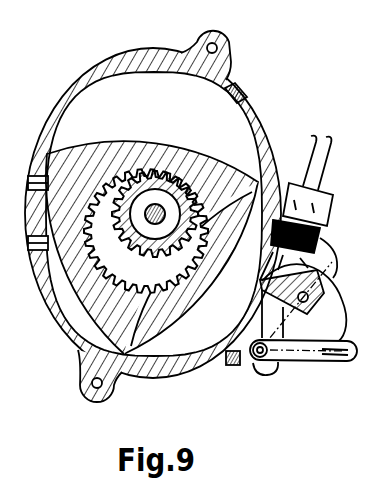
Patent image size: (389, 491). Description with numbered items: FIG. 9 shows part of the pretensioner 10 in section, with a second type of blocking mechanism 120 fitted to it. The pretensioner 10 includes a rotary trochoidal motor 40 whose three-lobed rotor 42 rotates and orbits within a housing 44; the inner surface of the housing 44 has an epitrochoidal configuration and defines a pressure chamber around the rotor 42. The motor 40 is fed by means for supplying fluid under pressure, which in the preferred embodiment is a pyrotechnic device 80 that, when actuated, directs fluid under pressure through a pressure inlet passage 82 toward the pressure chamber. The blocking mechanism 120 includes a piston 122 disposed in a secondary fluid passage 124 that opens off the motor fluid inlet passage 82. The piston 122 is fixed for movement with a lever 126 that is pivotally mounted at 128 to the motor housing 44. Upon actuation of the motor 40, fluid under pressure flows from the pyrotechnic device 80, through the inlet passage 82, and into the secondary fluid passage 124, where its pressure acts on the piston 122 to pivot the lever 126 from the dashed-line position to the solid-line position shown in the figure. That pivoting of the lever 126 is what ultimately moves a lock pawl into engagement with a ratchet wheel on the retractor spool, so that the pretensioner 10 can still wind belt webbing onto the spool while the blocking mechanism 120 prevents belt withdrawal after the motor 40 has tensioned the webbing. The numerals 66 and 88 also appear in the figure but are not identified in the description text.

The pretensioner 10 is at (388, 120).
The rotary trochoidal motor 40 is at (282, 133).
The three-lobed rotor 42 is at (163, 152).
The housing 44 is at (161, 378).
The shaft 66 is at (155, 212).
The pyrotechnic device 80 is at (333, 193).
The pressure inlet passage 82 is at (263, 252).
The seal segment 88 is at (241, 91).
The blocking mechanism 120 is at (232, 414).
The piston 122 is at (348, 289).
The secondary fluid passage 124 is at (340, 251).
The lever 126 is at (319, 362).
The pivot mounting 128 is at (265, 362).